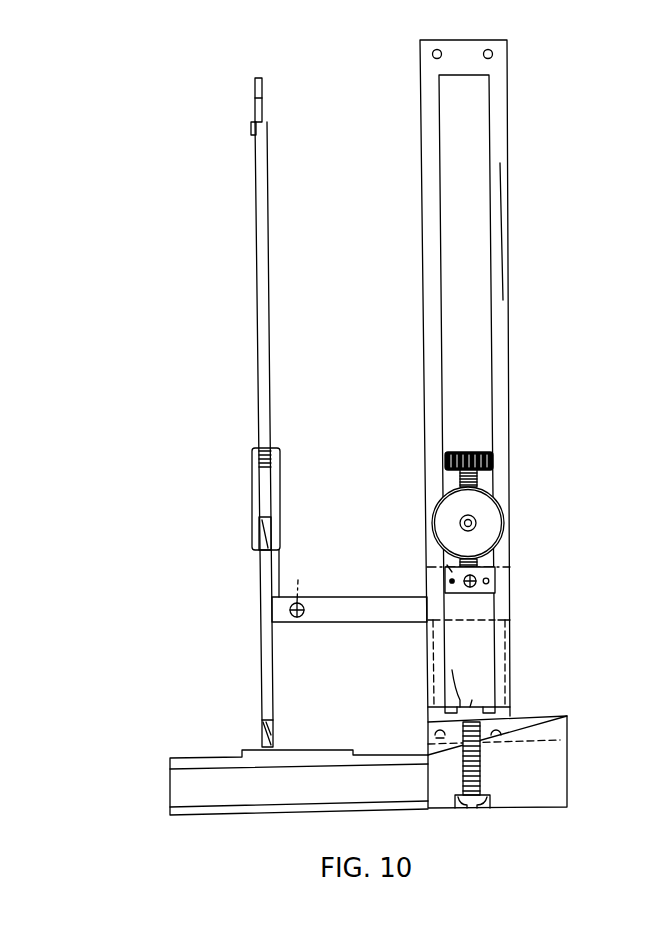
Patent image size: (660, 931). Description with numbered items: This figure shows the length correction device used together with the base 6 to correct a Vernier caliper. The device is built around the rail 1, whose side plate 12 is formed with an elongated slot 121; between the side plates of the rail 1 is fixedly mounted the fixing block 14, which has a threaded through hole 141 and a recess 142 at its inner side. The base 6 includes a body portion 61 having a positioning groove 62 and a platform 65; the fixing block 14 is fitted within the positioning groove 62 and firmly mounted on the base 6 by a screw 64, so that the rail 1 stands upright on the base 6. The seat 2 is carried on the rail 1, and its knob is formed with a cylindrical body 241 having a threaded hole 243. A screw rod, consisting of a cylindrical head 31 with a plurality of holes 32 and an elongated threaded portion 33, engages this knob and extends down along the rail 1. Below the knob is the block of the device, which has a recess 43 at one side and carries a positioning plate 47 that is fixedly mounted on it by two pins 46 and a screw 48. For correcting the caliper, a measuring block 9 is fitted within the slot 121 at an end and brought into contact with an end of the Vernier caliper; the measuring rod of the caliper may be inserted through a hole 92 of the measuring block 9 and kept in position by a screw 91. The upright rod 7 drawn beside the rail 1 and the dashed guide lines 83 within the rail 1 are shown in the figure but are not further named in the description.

The rail 1 is at (540, 238).
The side plate 12 is at (500, 163).
The elongated slot 121 is at (475, 98).
The seat 2 is at (403, 490).
The cylindrical head 31 is at (518, 434).
The holes 32 is at (493, 462).
The elongated threaded portion 33 is at (480, 478).
The cylindrical body 241 is at (512, 527).
The threaded hole 243 is at (478, 523).
The recess 43 is at (478, 593).
The pin 46 is at (449, 581).
The positioning plate 47 is at (447, 565).
The screw 48 is at (480, 581).
The guide rails 83 is at (483, 652).
The threaded through hole 141 is at (472, 700).
The recess 142 is at (450, 670).
The fixing block 14 is at (508, 755).
The positioning groove 62 is at (552, 730).
The screw 64 is at (480, 770).
The base 6 is at (261, 742).
The body portion 61 is at (190, 790).
The platform 65 is at (250, 745).
The rod 7 is at (252, 338).
The measuring block 9 is at (358, 610).
The screw 91 is at (302, 625).
The hole 92 is at (299, 580).